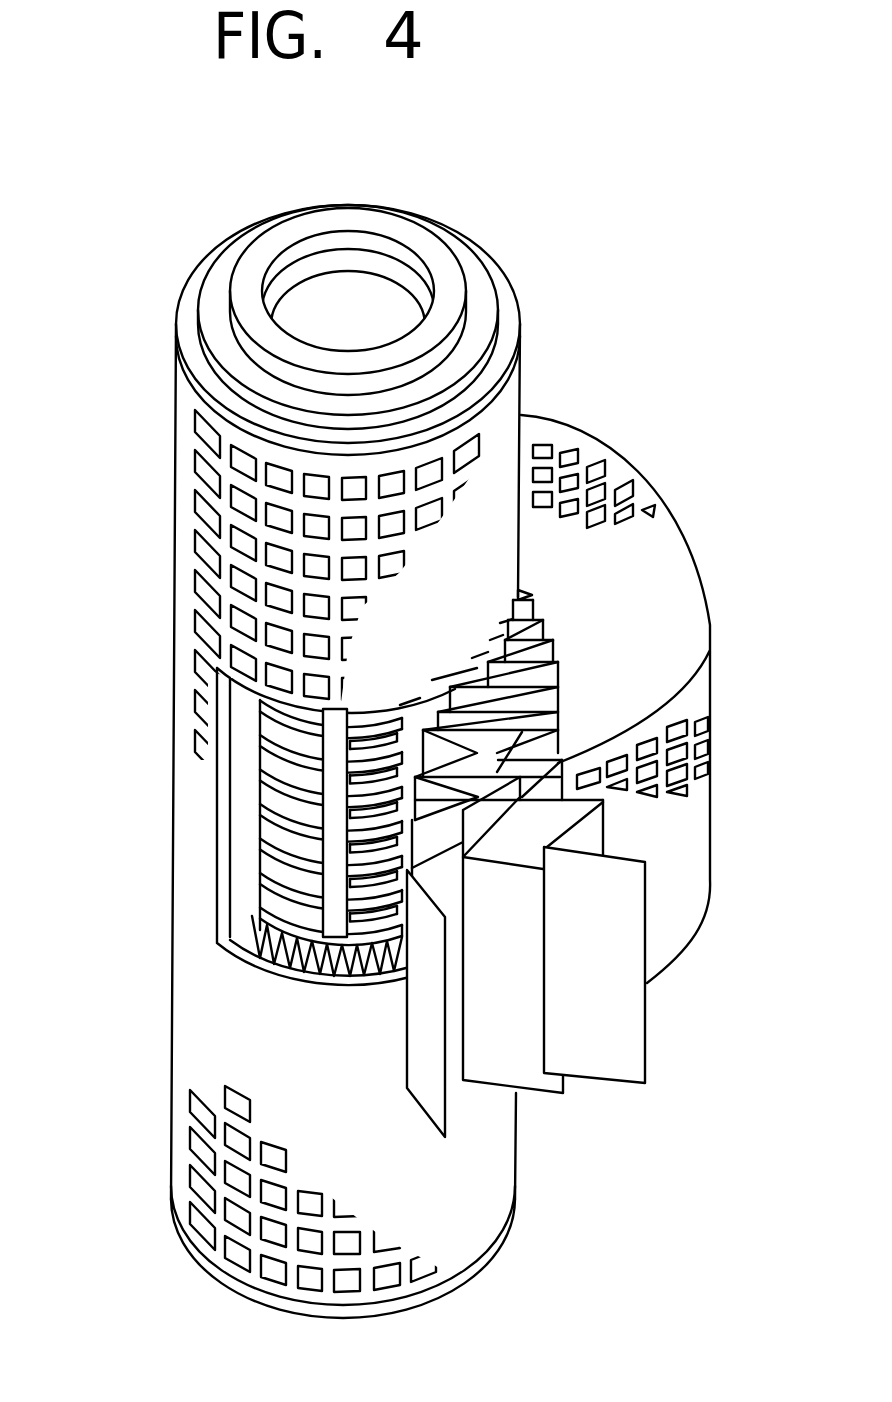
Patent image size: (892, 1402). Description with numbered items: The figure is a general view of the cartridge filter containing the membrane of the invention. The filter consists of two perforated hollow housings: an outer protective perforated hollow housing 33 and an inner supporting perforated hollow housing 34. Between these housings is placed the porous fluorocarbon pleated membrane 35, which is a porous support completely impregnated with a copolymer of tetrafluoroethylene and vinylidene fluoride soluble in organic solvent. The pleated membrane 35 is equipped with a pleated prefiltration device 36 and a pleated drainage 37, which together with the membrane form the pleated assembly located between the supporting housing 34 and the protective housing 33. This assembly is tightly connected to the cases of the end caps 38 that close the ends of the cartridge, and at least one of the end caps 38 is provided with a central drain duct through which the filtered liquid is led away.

The protective perforated hollow housing 33 is at (207, 637).
The supporting perforated hollow housing 34 is at (270, 853).
The porous fluorocarbon pleated membrane 35 is at (533, 1092).
The pleated prefiltration device 36 is at (645, 1053).
The pleated drainage 37 is at (405, 1037).
The end cap 38 is at (492, 402).